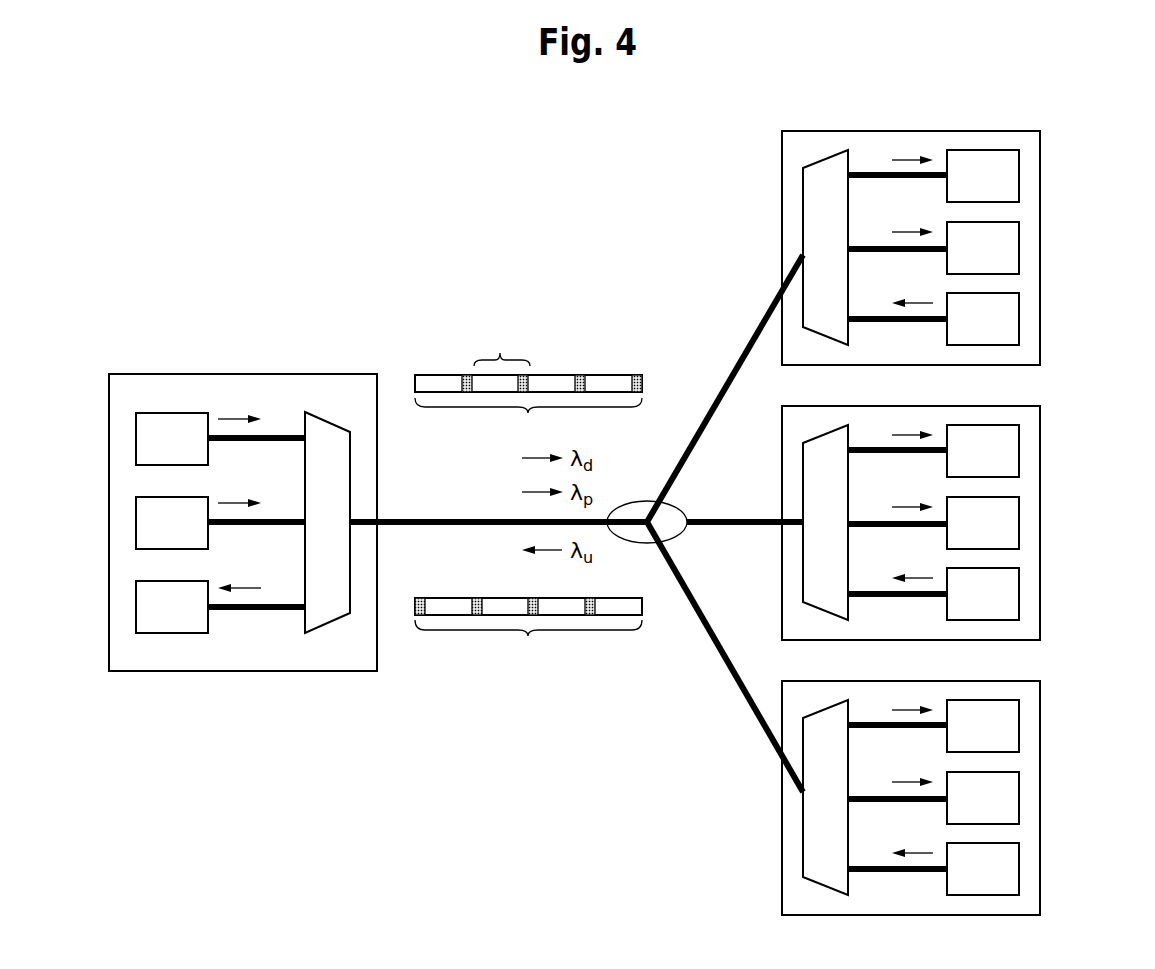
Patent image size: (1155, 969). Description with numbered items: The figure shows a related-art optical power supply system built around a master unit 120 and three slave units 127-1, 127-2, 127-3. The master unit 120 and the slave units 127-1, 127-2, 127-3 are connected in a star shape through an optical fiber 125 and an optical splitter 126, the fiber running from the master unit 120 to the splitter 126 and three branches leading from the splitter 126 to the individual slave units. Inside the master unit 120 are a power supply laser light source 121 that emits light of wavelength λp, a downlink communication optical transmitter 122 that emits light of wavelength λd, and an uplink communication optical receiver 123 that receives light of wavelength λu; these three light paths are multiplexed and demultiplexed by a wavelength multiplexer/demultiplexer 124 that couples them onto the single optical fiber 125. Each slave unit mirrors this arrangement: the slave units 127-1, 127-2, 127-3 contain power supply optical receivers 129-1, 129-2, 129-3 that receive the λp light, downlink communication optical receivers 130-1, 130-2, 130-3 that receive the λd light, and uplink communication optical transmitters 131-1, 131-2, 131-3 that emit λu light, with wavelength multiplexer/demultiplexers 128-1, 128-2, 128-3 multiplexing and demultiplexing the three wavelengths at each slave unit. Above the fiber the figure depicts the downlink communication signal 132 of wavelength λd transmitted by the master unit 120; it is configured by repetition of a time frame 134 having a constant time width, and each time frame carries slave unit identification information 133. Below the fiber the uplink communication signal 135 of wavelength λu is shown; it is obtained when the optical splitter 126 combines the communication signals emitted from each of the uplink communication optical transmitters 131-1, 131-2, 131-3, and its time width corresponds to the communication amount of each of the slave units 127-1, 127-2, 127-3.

The master unit 120 is at (213, 374).
The power supply laser light source 121 is at (136, 438).
The downlink communication optical transmitter 122 is at (136, 522).
The uplink communication optical receiver 123 is at (136, 607).
The wavelength multiplexer/demultiplexer 124 is at (327, 605).
The optical fiber 125 is at (400, 526).
The optical splitter 126 is at (638, 545).
The slave unit 127-1 is at (1000, 131).
The slave unit 127-2 is at (1000, 406).
The slave unit 127-3 is at (1000, 681).
The wavelength multiplexer/demultiplexer 128-1 is at (822, 198).
The wavelength multiplexer/demultiplexer 128-2 is at (822, 582).
The wavelength multiplexer/demultiplexer 128-3 is at (822, 845).
The power supply optical receiver 129-1 is at (1019, 175).
The power supply optical receiver 129-2 is at (1019, 450).
The power supply optical receiver 129-3 is at (1019, 725).
The downlink communication optical receiver 130-1 is at (1019, 249).
The downlink communication optical receiver 130-2 is at (1019, 524).
The downlink communication optical receiver 130-3 is at (1019, 799).
The uplink communication optical transmitter 131-1 is at (1019, 319).
The uplink communication optical transmitter 131-2 is at (1019, 594).
The uplink communication optical transmitter 131-3 is at (1019, 869).
The downlink communication signal 132 is at (528, 413).
The slave unit identification information 133 is at (466, 375).
The time frame 134 is at (500, 353).
The uplink communication signal 135 is at (528, 636).